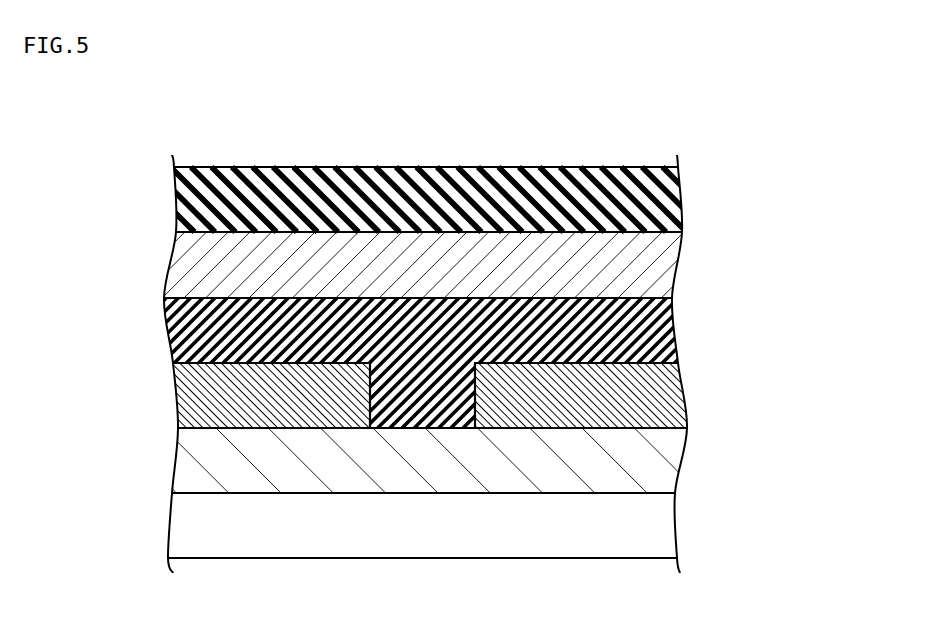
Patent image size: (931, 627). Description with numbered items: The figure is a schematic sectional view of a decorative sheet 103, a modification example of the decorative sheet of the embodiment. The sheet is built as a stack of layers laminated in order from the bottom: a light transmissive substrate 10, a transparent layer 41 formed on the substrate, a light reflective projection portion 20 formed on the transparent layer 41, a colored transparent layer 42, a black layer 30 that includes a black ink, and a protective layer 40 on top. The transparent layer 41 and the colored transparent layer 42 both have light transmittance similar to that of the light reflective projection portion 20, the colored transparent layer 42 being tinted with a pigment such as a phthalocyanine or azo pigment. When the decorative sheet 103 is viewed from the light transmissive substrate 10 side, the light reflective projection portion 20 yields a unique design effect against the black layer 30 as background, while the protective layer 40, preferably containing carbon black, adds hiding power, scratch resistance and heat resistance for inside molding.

The light transmissive substrate 10 is at (660, 520).
The light reflective projection portion 20 is at (663, 397).
The black layer 30 is at (663, 268).
The protective layer 40 is at (663, 203).
The transparent layer 41 is at (660, 462).
The colored transparent layer 42 is at (663, 333).
The decorative sheet 103 is at (758, 573).